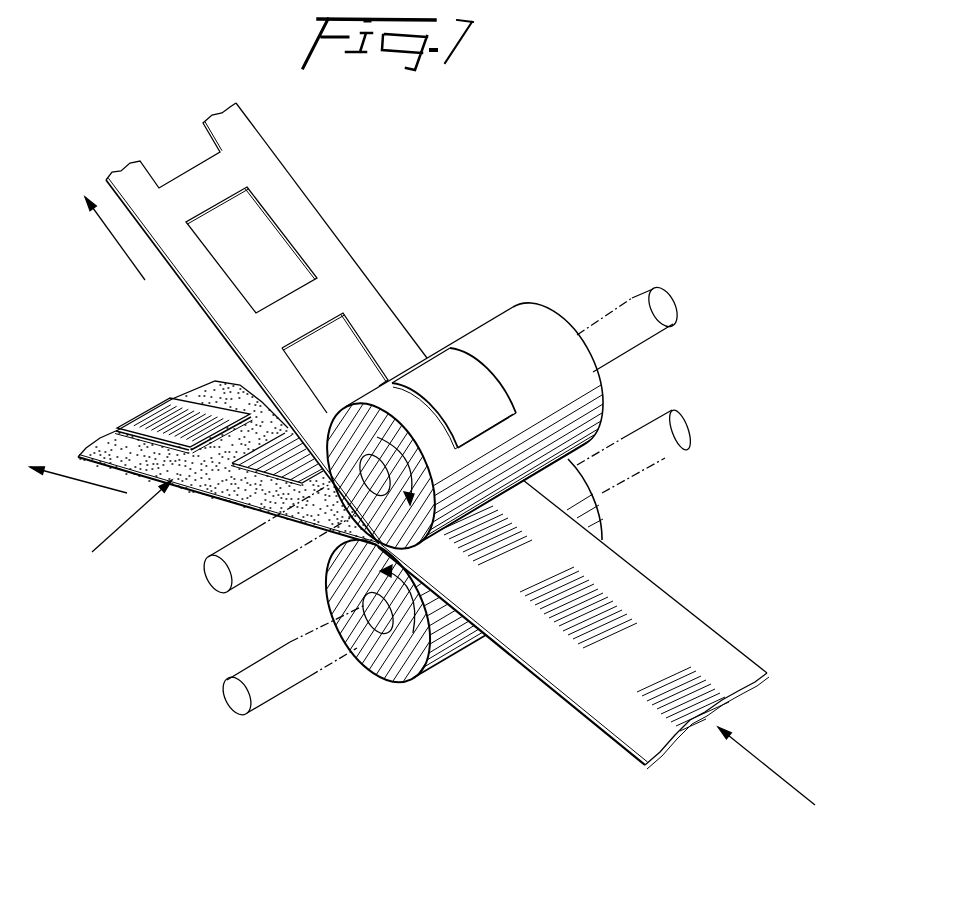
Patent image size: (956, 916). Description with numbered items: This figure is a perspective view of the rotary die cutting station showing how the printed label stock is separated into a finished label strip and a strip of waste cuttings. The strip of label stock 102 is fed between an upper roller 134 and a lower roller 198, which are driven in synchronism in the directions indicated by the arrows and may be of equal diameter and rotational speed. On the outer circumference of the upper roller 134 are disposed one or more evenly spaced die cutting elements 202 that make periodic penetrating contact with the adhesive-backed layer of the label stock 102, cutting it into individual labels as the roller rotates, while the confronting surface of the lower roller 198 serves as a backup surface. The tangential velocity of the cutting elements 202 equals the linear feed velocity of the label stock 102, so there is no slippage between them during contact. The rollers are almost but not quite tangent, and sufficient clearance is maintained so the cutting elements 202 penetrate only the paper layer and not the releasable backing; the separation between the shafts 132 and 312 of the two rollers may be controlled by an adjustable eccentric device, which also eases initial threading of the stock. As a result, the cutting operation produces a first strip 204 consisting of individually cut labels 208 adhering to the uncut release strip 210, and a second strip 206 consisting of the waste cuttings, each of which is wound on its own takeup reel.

The second strip 206 is at (307, 207).
The die cutting elements 202 is at (475, 353).
The upper roller 134 is at (543, 330).
The shaft 132 is at (645, 265).
The individually cut labels 208 is at (147, 417).
The release strip 210 is at (108, 440).
The first strip 204 is at (117, 526).
The strip of label stock 102 is at (690, 625).
The lower roller 198 is at (400, 675).
The shaft 312 is at (258, 707).